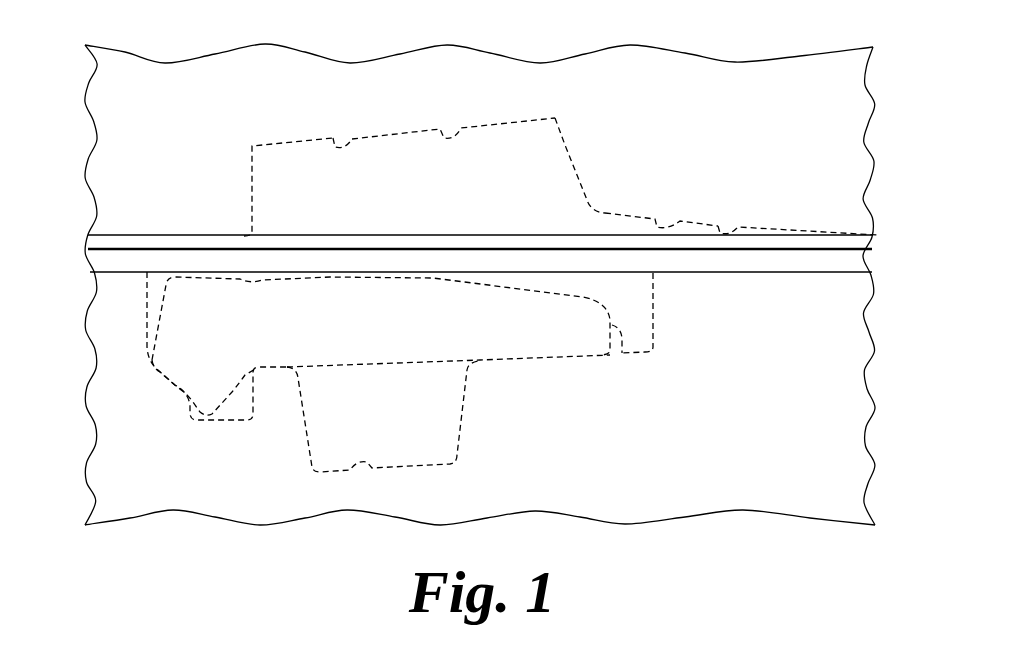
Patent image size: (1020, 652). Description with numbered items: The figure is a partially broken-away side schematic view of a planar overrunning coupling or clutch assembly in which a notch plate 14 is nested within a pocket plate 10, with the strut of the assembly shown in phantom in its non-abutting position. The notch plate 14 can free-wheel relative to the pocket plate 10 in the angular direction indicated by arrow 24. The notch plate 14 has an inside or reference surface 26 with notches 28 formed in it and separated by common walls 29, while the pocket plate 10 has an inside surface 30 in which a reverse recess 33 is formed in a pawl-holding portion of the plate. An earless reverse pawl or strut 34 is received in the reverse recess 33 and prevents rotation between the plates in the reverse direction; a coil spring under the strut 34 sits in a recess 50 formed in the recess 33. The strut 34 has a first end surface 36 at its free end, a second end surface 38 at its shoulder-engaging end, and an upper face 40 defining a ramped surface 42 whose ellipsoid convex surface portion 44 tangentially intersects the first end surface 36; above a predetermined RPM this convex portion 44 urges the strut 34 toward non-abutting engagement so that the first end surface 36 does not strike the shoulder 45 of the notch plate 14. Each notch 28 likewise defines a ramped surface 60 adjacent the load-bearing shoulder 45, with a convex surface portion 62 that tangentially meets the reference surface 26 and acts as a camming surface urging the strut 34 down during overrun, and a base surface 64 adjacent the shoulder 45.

The pocket plate 10 is at (816, 522).
The notch plate 14 is at (742, 62).
The arrow indicating free-wheeling direction 24 is at (709, 124).
The inside or reference surface 26 is at (153, 236).
The notch 28 is at (468, 130).
The common wall 29 is at (132, 141).
The inside surface 30 is at (137, 271).
The reverse recess 33 is at (649, 351).
The reverse pawl 34 is at (413, 365).
The first end surface 36 is at (621, 354).
The second end surface 38 is at (160, 378).
The upper face 40 is at (335, 274).
The ramped surface 42 is at (583, 297).
The convex surface portion 44 is at (492, 280).
The shoulder 45 is at (568, 140).
The spring recess 50 is at (357, 463).
The ramped surface 60 is at (742, 228).
The convex surface portion 62 is at (676, 224).
The base surface 64 is at (355, 140).